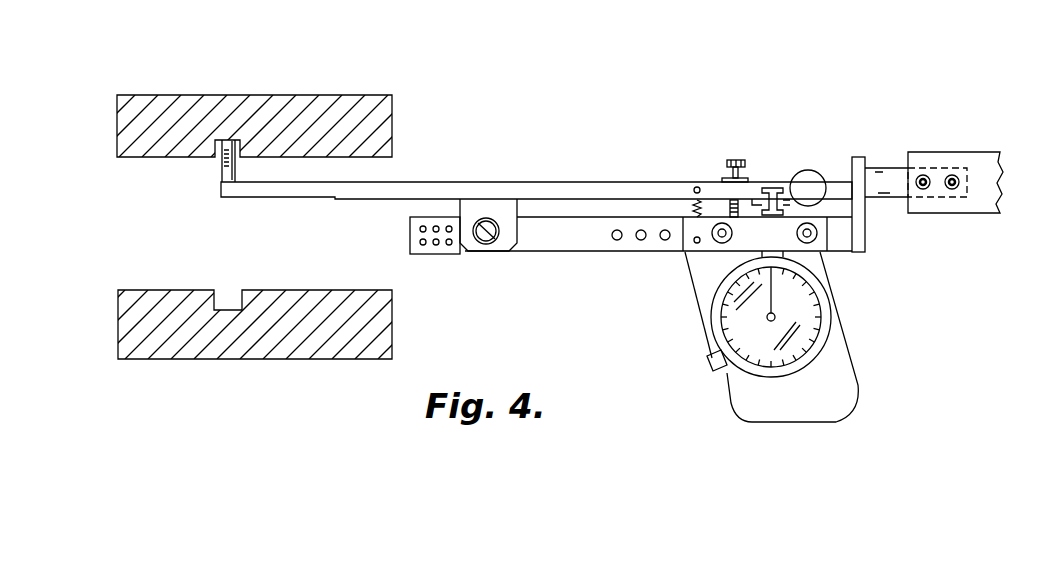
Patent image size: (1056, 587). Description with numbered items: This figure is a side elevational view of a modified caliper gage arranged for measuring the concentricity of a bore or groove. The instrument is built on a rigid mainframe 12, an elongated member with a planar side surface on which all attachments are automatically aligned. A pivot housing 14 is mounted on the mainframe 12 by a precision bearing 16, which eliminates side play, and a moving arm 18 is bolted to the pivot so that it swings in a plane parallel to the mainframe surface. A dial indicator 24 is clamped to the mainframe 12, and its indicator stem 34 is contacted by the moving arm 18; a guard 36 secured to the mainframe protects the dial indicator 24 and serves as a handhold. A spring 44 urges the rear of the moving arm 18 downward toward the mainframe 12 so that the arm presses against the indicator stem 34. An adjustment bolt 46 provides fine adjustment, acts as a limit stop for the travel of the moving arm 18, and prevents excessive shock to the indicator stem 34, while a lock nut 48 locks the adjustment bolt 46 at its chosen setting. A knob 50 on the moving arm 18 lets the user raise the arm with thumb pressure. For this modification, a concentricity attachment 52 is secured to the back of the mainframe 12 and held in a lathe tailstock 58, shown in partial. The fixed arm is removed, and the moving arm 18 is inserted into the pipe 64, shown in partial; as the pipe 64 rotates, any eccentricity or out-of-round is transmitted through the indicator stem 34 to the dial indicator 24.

The mainframe 12 is at (590, 253).
The pivot housing 14 is at (518, 234).
The precision bearing 16 is at (487, 244).
The moving arm 18 is at (595, 182).
The dial indicator 24 is at (826, 348).
The indicator stem 34 is at (755, 193).
The guard 36 is at (855, 404).
The spring 44 is at (693, 203).
The adjustment bolt 46 is at (731, 200).
The lock nut 48 is at (747, 160).
The knob 50 is at (815, 171).
The concentricity attachment 52 is at (867, 237).
The lathe tailstock 58 is at (942, 213).
The pipe 64 is at (238, 94).